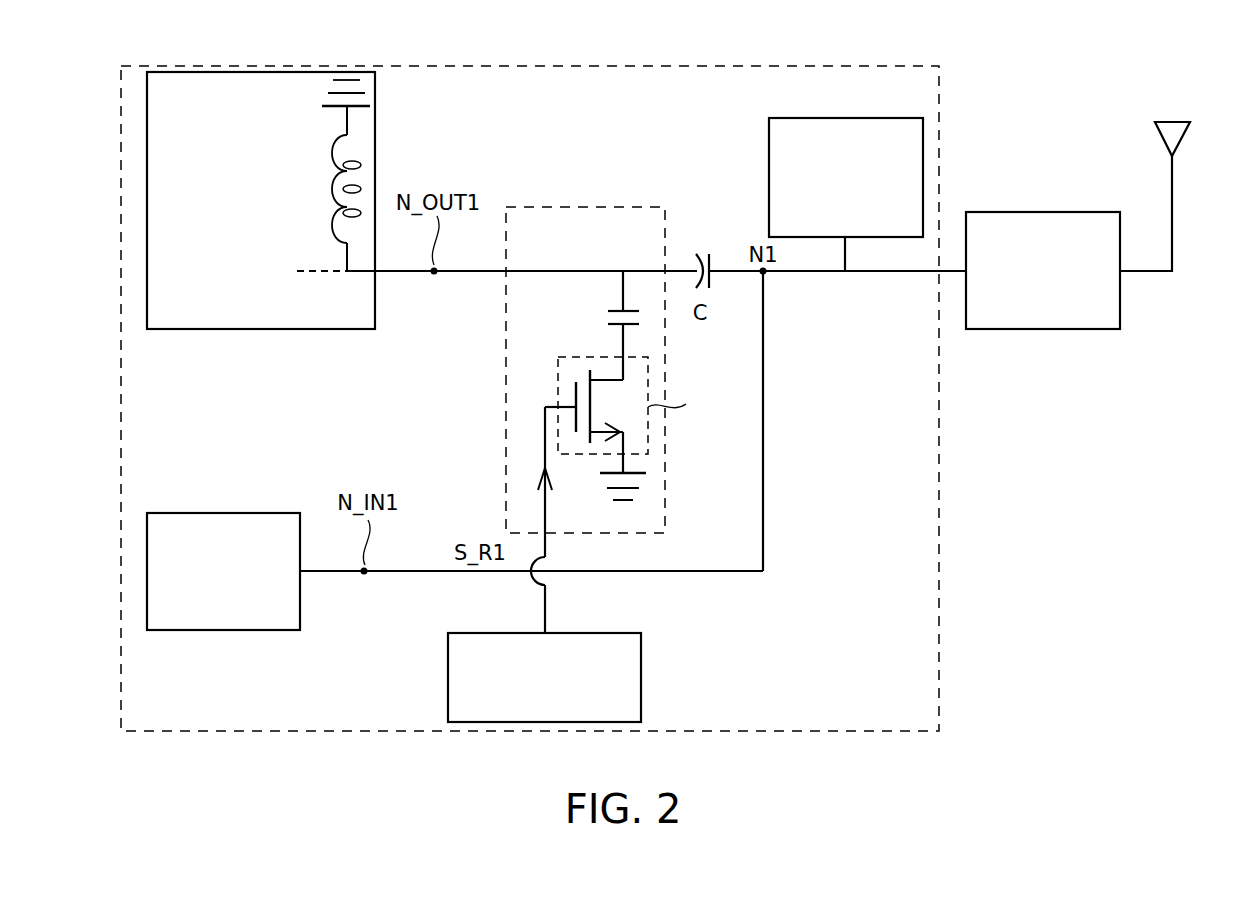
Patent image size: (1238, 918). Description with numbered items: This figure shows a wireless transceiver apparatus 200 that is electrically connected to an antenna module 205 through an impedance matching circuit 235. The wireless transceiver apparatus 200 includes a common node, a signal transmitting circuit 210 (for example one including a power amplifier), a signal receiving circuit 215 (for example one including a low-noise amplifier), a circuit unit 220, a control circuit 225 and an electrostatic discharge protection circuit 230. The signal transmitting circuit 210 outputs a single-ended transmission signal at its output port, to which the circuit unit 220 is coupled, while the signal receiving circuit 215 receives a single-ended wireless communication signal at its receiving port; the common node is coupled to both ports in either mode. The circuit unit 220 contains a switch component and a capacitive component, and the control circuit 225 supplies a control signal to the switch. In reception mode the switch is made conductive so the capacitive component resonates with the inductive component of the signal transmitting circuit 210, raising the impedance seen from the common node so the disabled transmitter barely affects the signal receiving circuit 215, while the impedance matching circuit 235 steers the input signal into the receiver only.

The wireless transceiver apparatus 200 is at (542, 66).
The antenna module 205 is at (1172, 120).
The signal transmitting circuit 210 is at (225, 331).
The signal receiving circuit 215 is at (222, 633).
The circuit unit 220 is at (552, 207).
The control circuit 225 is at (643, 690).
The electrostatic discharge (ESD) protection circuit 230 is at (768, 181).
The impedance matching circuit 235 is at (1045, 332).